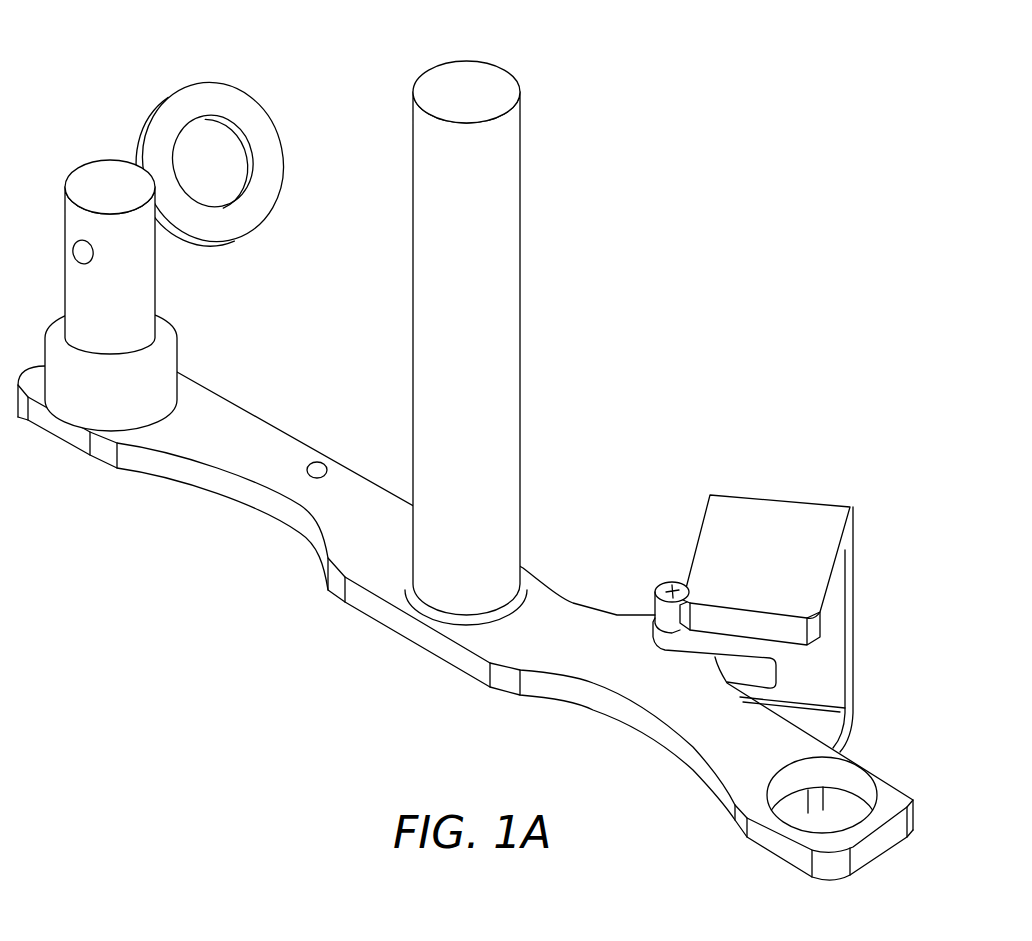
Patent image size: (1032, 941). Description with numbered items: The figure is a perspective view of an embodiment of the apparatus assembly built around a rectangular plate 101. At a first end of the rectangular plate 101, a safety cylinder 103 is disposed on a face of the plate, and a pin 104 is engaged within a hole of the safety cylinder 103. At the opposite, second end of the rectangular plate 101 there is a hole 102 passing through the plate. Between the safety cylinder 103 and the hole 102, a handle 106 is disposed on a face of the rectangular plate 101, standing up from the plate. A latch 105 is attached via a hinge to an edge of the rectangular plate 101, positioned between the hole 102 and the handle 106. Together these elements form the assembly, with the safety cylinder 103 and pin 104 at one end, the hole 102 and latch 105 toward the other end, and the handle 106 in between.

The rectangular plate 101 is at (247, 455).
The hole 102 is at (825, 782).
The safety cylinder 103 is at (173, 253).
The pin 104 is at (135, 97).
The latch 105 is at (715, 482).
The handle 106 is at (530, 118).